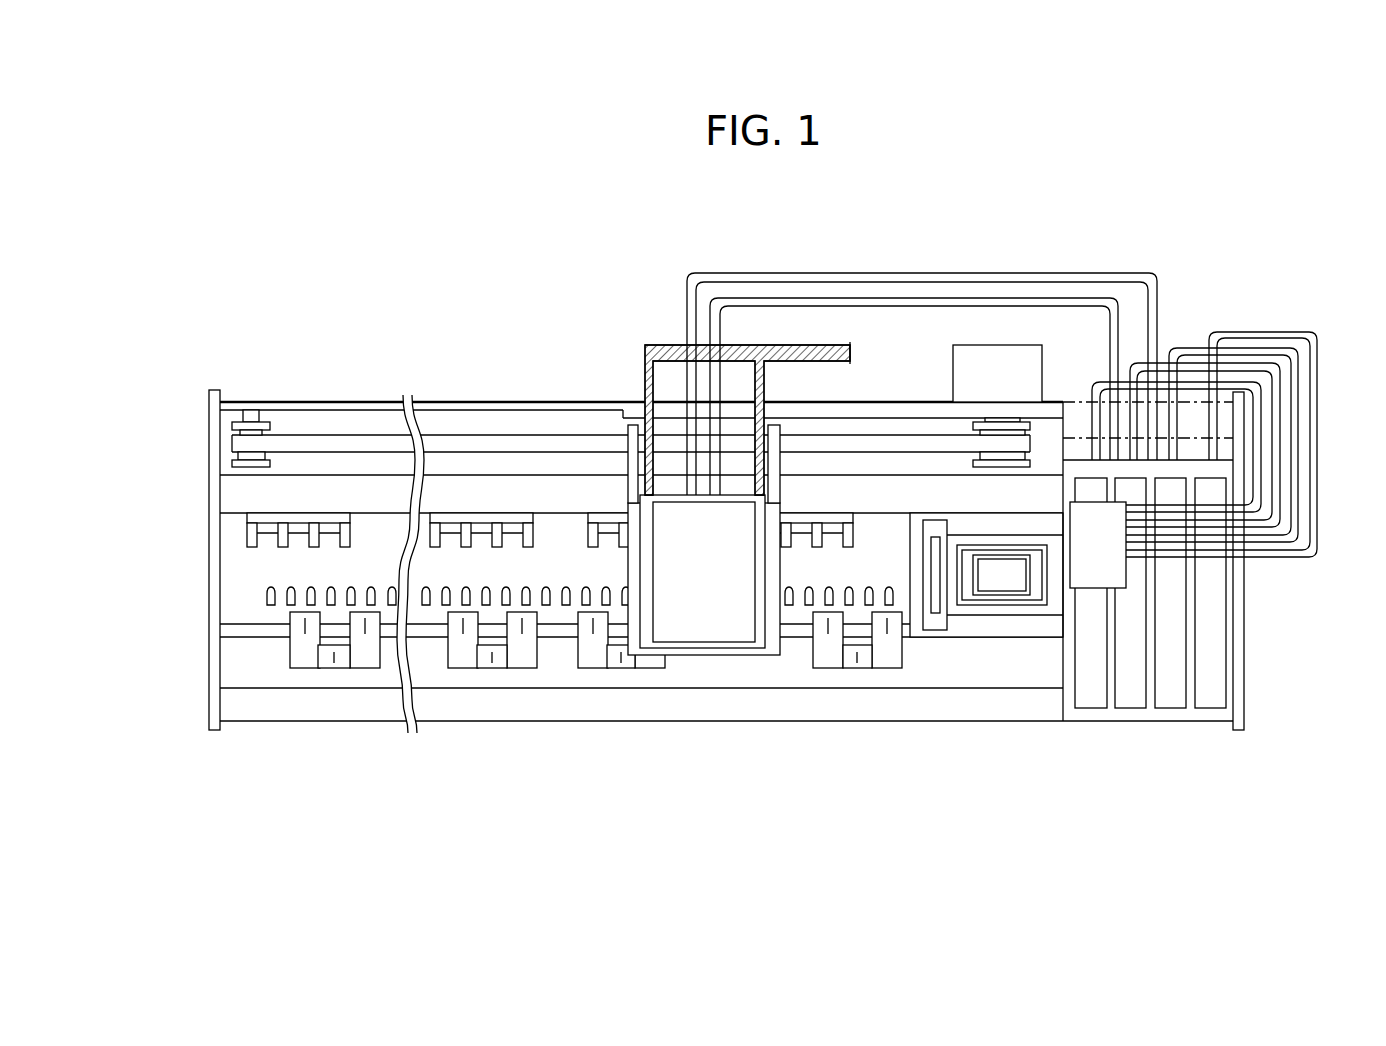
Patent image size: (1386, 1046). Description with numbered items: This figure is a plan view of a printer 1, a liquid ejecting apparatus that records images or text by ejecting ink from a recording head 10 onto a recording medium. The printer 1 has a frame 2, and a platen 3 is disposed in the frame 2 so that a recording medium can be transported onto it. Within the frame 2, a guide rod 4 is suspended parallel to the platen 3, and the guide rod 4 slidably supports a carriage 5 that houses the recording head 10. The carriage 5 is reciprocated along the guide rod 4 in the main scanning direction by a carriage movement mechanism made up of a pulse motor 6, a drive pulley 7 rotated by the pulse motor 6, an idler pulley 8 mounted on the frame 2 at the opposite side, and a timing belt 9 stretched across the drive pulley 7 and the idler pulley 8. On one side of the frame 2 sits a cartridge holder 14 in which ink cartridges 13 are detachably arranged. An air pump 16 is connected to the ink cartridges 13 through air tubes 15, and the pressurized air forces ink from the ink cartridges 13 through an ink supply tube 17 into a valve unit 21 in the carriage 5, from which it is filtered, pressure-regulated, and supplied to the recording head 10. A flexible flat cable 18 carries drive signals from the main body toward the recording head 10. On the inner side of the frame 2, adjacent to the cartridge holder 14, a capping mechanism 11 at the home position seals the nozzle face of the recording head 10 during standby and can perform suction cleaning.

The printer 1 is at (1207, 205).
The frame 2 is at (216, 466).
The platen 3 is at (247, 573).
The guide rod 4 is at (485, 492).
The carriage 5 is at (682, 655).
The pulse motor 6 is at (968, 370).
The drive pulley 7 is at (980, 455).
The idler pulley 8 is at (257, 457).
The timing belt 9 is at (548, 445).
The recording head 10 is at (770, 562).
The capping mechanism 11 is at (998, 591).
The ink cartridges 13 is at (1208, 697).
The cartridge holder 14 is at (1072, 673).
The air tubes 15 is at (1197, 382).
The air pump 16 is at (1080, 512).
The ink supply tube 17 is at (948, 273).
The flexible flat cable 18 is at (647, 347).
The valve unit 21 is at (712, 627).